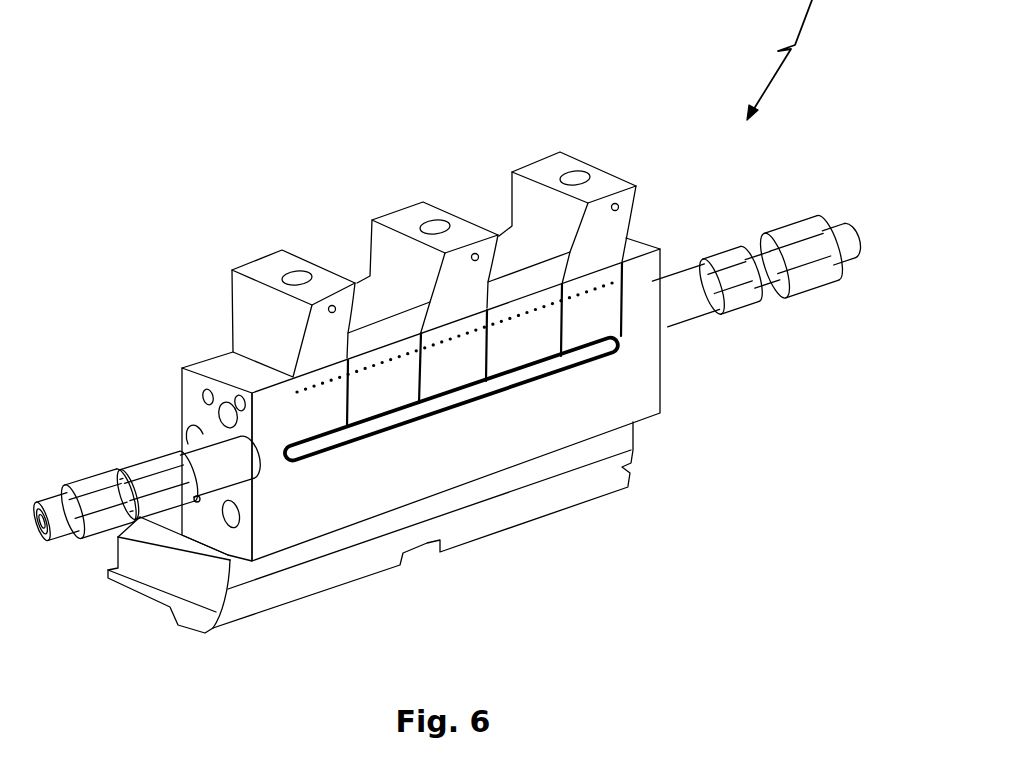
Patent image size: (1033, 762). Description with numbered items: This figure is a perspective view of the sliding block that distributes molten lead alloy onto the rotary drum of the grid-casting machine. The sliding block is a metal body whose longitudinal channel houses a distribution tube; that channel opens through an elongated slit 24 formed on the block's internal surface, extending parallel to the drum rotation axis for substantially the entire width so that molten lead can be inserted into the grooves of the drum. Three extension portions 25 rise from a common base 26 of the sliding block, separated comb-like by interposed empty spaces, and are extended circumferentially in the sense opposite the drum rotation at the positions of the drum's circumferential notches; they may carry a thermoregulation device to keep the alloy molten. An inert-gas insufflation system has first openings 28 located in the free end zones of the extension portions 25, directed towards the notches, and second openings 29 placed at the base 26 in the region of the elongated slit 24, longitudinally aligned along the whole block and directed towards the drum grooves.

The elongated slit 24 is at (593, 362).
The extension portions 25 is at (265, 273).
The common base 26 is at (636, 365).
The first openings 28 is at (331, 305).
The second openings 29 is at (603, 282).